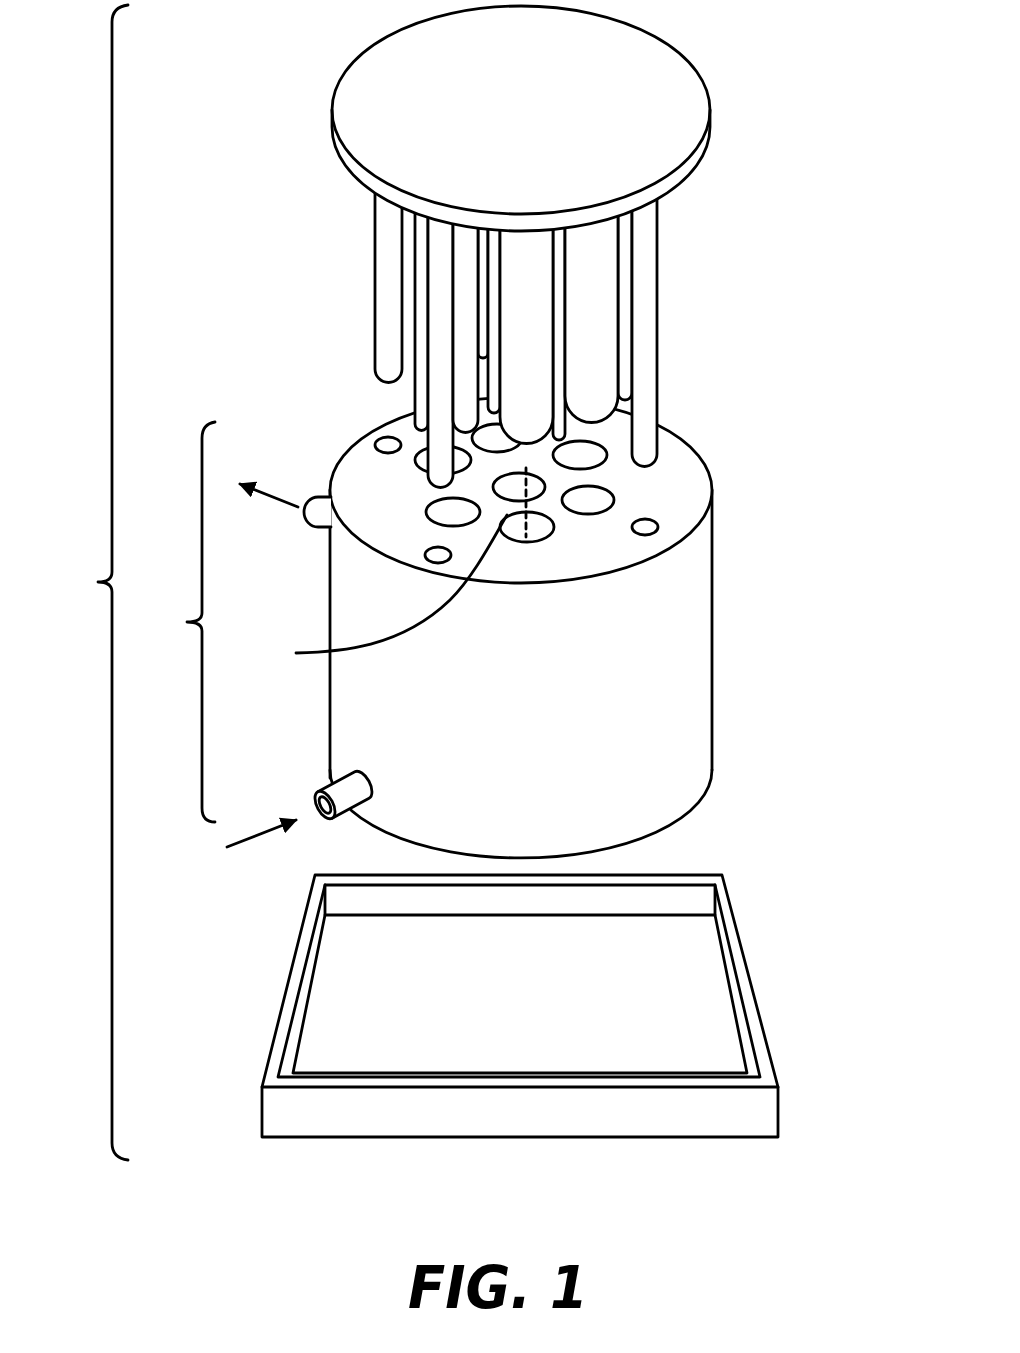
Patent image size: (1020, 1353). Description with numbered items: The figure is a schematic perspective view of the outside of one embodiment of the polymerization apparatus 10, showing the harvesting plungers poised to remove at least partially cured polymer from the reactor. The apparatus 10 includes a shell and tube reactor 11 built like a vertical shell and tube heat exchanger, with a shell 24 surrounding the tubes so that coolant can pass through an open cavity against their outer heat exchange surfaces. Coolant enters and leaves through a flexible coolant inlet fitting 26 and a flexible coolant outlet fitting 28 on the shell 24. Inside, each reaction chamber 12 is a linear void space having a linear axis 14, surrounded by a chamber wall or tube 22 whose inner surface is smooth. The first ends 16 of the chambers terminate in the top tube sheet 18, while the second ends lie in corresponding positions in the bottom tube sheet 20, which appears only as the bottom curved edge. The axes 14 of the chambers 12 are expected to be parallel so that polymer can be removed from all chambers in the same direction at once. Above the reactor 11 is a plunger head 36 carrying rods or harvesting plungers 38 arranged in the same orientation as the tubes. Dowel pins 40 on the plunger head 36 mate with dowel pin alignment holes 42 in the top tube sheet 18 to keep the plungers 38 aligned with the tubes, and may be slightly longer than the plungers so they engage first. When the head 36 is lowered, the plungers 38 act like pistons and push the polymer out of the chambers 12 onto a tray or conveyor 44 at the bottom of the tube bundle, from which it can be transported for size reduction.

The polymerization apparatus 10 is at (92, 582).
The shell and tube reactor 11 is at (180, 622).
The reaction chamber 12 is at (622, 490).
The linear axis 14 is at (382, 592).
The first ends 16 is at (615, 503).
The top tube sheet 18 is at (677, 455).
The bottom tube sheet 20 is at (571, 674).
The chamber wall or tube 22 is at (430, 507).
The shell 24 is at (503, 706).
The flexible coolant inlet fitting 26 is at (340, 820).
The flexible coolant outlet fitting 28 is at (317, 530).
The plunger head 36 is at (537, 128).
The harvesting plungers 38 is at (462, 325).
The dowel pins 40 is at (388, 243).
The dowel pin alignment holes 42 is at (378, 440).
The tray or conveyor 44 is at (540, 999).